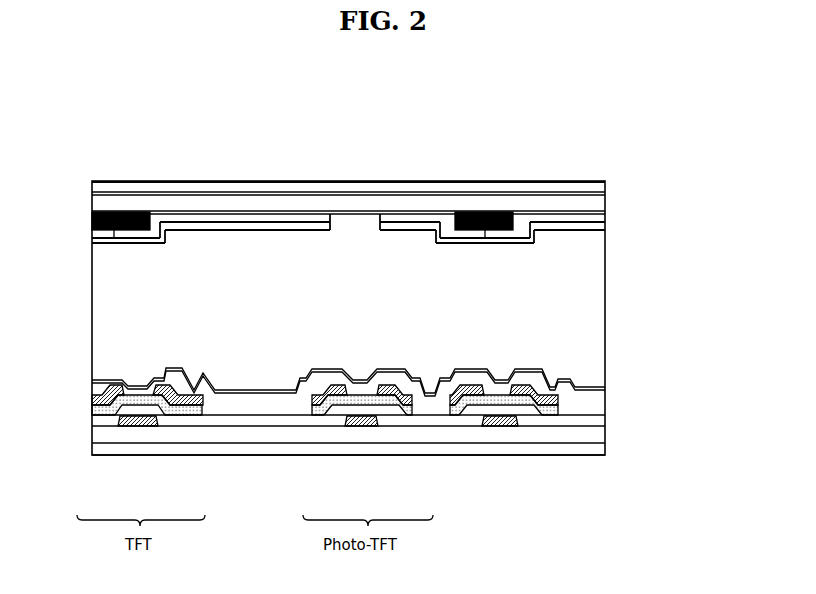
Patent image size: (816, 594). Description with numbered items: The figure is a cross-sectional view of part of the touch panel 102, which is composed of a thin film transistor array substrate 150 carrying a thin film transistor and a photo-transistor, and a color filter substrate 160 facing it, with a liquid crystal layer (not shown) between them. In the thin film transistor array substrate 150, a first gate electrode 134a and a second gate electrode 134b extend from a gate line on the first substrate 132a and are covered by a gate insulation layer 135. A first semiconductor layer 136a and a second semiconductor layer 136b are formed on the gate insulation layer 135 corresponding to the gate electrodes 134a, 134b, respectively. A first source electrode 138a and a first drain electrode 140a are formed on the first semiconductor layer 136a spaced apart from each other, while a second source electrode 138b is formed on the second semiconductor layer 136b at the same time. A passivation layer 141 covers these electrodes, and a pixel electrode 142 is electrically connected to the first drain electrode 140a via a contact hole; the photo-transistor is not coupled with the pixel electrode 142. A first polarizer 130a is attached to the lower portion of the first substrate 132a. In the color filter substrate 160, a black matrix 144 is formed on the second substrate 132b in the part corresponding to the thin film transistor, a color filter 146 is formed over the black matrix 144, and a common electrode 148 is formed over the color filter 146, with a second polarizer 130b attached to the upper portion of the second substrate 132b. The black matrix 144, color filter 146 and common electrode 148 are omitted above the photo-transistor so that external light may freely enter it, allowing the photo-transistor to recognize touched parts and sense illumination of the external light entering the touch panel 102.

The touch panel 102 is at (196, 146).
The first polarizer 130a is at (605, 449).
The second polarizer 130b is at (607, 185).
The first substrate 132a is at (605, 436).
The second substrate 132b is at (607, 207).
The first gate electrode 134a is at (142, 427).
The second gate electrode 134b is at (365, 427).
The gate insulation layer 135 is at (605, 420).
The first semiconductor layer 136a is at (106, 411).
The second semiconductor layer 136b is at (331, 412).
The first source electrode 138a is at (92, 407).
The second source electrode 138b is at (312, 404).
The first drain electrode 140a is at (184, 403).
The passivation layer 141 is at (607, 398).
The pixel electrode 142 is at (607, 387).
The black matrix 144 is at (92, 223).
The color filter 146 is at (250, 220).
The common electrode 148 is at (123, 243).
The TFT array substrate 150 is at (680, 368).
The color filter substrate 160 is at (680, 180).